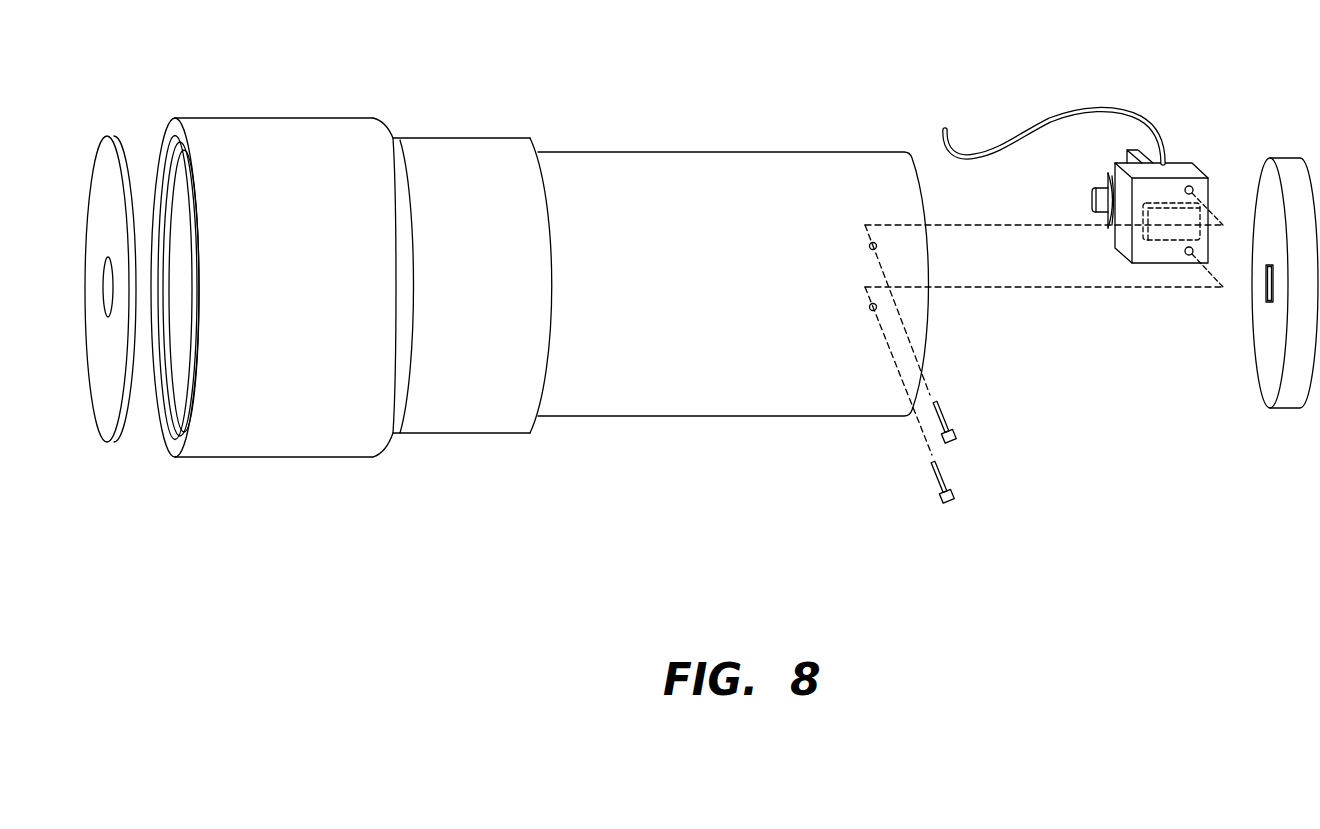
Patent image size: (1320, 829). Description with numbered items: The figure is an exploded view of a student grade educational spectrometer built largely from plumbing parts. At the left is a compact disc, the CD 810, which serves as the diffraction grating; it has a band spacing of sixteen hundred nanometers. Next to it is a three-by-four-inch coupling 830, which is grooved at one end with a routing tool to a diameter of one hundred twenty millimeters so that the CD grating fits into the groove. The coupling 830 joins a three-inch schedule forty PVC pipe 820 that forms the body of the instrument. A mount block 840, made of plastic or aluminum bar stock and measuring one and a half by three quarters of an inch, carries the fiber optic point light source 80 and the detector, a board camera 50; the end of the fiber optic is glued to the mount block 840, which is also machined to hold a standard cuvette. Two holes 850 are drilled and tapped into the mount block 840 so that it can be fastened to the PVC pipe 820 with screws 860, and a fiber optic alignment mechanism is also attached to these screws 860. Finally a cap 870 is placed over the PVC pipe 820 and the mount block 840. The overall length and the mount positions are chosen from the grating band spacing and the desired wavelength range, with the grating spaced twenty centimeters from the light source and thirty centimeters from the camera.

The CD 810 is at (107, 137).
The coupling 830 is at (532, 467).
The PVC pipe 820 is at (798, 158).
The holes 850 is at (869, 247).
The screws 860 is at (958, 438).
The mount block 840 is at (1183, 167).
The fiber optic point light source 80 is at (1047, 122).
The board camera 50 is at (1092, 198).
The cap 870 is at (1288, 162).